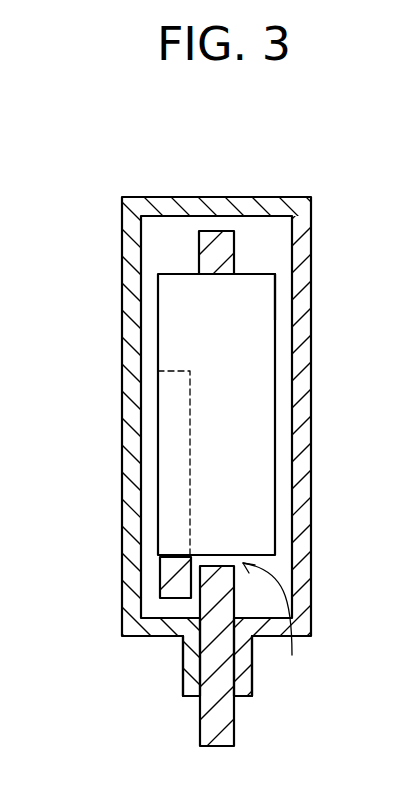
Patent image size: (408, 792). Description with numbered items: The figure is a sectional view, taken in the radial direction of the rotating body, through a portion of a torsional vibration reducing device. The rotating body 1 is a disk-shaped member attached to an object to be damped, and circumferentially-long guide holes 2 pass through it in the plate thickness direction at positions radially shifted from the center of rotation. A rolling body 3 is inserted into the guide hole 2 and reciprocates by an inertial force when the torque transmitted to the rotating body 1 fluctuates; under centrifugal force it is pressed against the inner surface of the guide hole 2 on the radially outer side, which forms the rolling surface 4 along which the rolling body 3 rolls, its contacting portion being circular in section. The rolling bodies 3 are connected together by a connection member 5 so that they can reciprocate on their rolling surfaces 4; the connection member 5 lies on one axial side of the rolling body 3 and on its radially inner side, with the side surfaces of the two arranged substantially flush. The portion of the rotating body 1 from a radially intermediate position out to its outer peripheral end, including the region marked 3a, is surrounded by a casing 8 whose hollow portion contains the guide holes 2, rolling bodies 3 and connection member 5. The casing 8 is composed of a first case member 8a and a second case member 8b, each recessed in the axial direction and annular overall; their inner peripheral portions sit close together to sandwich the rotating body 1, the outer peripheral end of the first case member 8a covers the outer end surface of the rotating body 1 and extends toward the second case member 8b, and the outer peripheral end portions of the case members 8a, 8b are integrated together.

The rotating body 1 is at (213, 730).
The guide hole 2 is at (274, 624).
The rolling body 3 is at (173, 338).
The end portion of fuse body 3a is at (254, 274).
The rolling surface 4 is at (220, 275).
The connection member 5 is at (173, 589).
The casing 8 is at (43, 618).
The first case member 8a is at (123, 615).
The second case member 8b is at (243, 665).